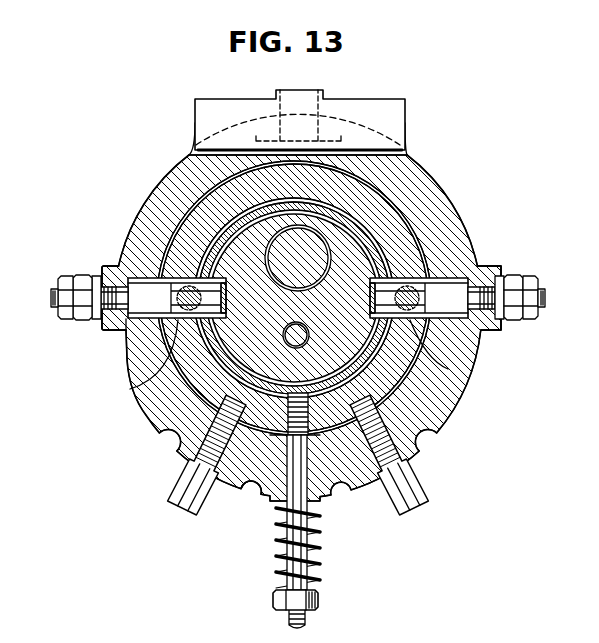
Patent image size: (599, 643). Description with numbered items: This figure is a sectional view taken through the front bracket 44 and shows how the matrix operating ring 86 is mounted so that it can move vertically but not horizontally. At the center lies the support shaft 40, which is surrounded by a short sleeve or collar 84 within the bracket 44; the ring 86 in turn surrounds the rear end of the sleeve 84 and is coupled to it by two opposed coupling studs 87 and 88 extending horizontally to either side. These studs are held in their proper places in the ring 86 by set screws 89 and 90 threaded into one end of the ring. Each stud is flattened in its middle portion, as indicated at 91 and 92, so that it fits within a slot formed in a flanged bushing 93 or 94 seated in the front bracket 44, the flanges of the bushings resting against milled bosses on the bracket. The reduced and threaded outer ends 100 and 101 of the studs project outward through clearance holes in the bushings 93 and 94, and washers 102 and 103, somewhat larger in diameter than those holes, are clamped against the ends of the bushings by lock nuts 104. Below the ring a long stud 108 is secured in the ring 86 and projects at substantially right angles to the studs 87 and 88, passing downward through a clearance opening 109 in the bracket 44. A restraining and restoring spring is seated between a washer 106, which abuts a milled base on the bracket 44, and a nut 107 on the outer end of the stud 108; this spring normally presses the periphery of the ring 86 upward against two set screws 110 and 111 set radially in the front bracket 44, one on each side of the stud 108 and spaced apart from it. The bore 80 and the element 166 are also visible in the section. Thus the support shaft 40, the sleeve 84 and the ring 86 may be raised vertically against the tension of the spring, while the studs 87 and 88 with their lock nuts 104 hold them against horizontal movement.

The support shaft 40 is at (318, 362).
The front bracket 44 is at (438, 208).
The bore 80 is at (272, 260).
The sleeve 84 is at (368, 244).
The matrix operating ring 86 is at (366, 190).
The coupling stud 87 is at (122, 380).
The coupling stud 88 is at (440, 361).
The set screw 89 is at (163, 285).
The set screw 90 is at (428, 297).
The flattened middle portion 91 is at (120, 322).
The flattened middle portion 92 is at (479, 259).
The flanged bushing 93 is at (103, 259).
The flanged bushing 94 is at (513, 266).
The reduced threaded outer end 100 is at (89, 312).
The reduced threaded outer end 101 is at (537, 300).
The washer 102 is at (77, 267).
The washer 103 is at (491, 312).
The lock nut 104 is at (60, 311).
The washer 106 is at (310, 493).
The nut 107 is at (309, 583).
The long stud 108 is at (279, 543).
The clearance opening 109 is at (246, 487).
The set screw 110 is at (168, 488).
The set screw 111 is at (428, 468).
The pin 166 is at (300, 324).